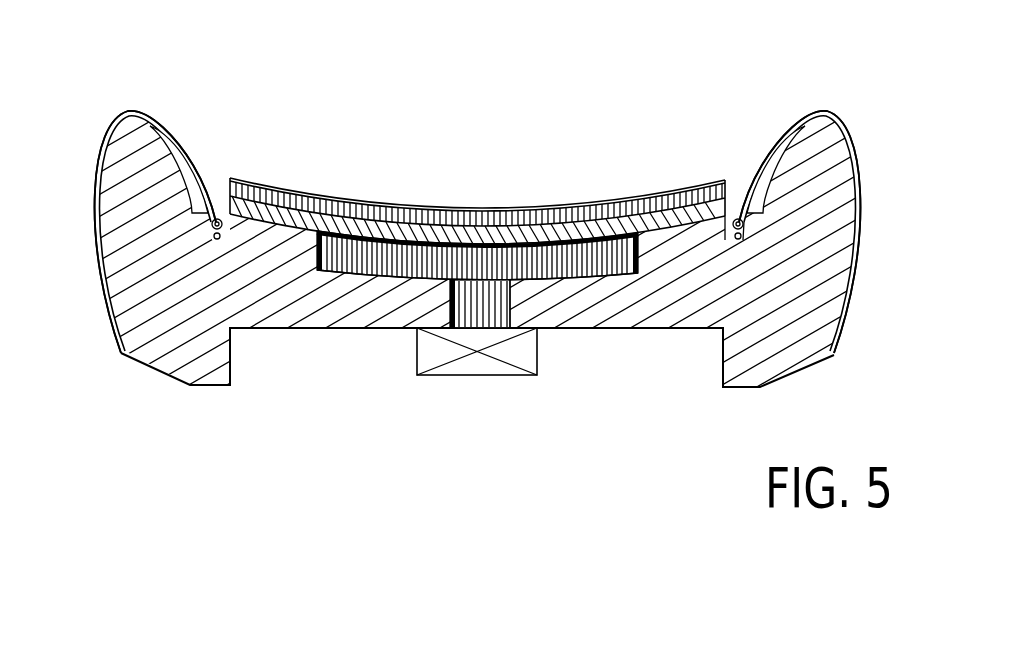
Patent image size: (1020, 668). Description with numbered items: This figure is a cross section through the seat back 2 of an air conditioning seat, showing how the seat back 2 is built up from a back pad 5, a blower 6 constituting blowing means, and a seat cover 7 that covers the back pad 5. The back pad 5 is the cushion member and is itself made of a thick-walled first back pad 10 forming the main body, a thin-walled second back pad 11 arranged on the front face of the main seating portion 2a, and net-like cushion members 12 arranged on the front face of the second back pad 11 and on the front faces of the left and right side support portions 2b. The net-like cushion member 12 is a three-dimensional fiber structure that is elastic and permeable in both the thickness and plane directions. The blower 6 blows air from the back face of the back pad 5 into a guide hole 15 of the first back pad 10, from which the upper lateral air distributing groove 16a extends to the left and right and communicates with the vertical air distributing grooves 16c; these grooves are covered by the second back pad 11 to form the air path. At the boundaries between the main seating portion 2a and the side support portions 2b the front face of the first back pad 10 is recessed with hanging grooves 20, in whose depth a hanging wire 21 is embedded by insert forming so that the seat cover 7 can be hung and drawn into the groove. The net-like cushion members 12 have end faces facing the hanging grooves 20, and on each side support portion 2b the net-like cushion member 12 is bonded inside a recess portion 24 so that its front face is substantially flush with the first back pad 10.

The seat back 2 is at (852, 337).
The main seating portion 2a is at (403, 310).
The side support portion 2b is at (116, 200).
The back pad 5 is at (362, 82).
The blower 6 is at (480, 365).
The seat cover 7 is at (737, 205).
The first back pad 10 is at (367, 300).
The second back pad 11 is at (474, 179).
The net-like cushion member 12 is at (188, 135).
The guide hole 15 is at (498, 300).
The upper lateral air distributing groove 16a is at (563, 256).
The vertical air distributing groove 16c is at (320, 236).
The hanging groove 20 is at (113, 312).
The hanging wire 21 is at (220, 245).
The recess portion 24 is at (135, 112).